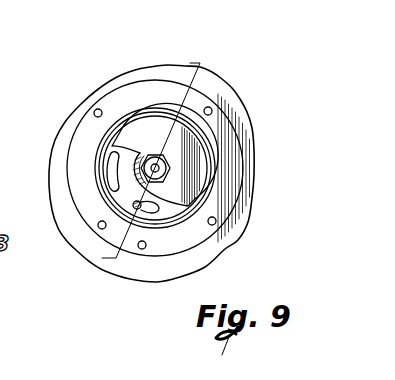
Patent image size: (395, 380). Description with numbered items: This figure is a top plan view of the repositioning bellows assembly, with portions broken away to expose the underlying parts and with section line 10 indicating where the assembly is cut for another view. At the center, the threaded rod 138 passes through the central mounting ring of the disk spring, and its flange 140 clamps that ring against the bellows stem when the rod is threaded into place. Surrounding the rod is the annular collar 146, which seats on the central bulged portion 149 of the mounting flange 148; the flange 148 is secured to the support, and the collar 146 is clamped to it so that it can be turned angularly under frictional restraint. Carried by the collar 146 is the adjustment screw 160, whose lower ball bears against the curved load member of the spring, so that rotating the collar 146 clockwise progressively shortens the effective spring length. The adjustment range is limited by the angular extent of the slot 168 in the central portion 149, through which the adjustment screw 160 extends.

The section line 10- 10 is at (190, 57).
The threaded rod 138 is at (157, 156).
The flange 140 is at (132, 119).
The annular collar 146 is at (202, 168).
The mounting flange 148 is at (230, 196).
The central bulged portion 149 is at (222, 131).
The adjustment screw 160 is at (140, 206).
The slot 168 is at (112, 186).